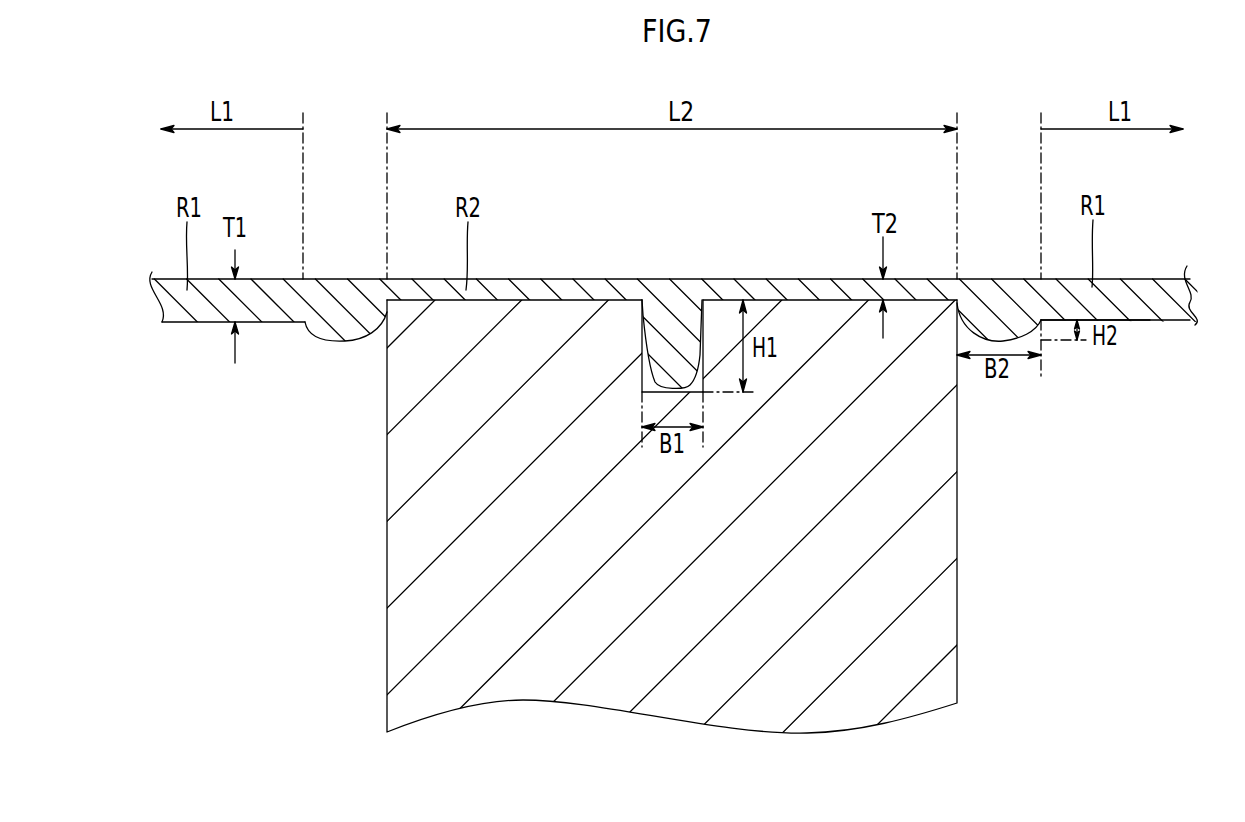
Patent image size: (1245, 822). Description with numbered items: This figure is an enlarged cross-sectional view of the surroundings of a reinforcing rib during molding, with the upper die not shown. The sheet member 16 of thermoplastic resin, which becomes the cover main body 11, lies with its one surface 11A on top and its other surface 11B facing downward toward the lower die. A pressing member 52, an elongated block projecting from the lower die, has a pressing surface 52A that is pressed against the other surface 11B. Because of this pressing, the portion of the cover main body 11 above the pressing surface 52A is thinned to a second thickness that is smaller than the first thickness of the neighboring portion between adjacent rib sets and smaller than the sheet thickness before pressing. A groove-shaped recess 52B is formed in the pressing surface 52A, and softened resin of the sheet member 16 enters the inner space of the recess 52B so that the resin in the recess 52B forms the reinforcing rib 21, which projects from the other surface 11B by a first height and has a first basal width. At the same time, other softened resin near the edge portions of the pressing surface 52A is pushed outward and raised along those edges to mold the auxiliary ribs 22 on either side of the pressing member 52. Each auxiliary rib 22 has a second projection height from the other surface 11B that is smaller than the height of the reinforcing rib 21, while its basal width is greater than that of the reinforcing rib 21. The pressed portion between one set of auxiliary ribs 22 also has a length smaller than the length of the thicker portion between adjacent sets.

The cover main body 11 is at (1178, 298).
The one surface 11A is at (1148, 279).
The other surface 11B is at (1143, 321).
The sheet member 16 is at (202, 324).
The reinforcing rib 21 is at (678, 370).
The auxiliary rib 22 is at (342, 333).
The pressing member 52 is at (930, 466).
The pressing surface 52A is at (552, 293).
The recess 52B is at (677, 372).